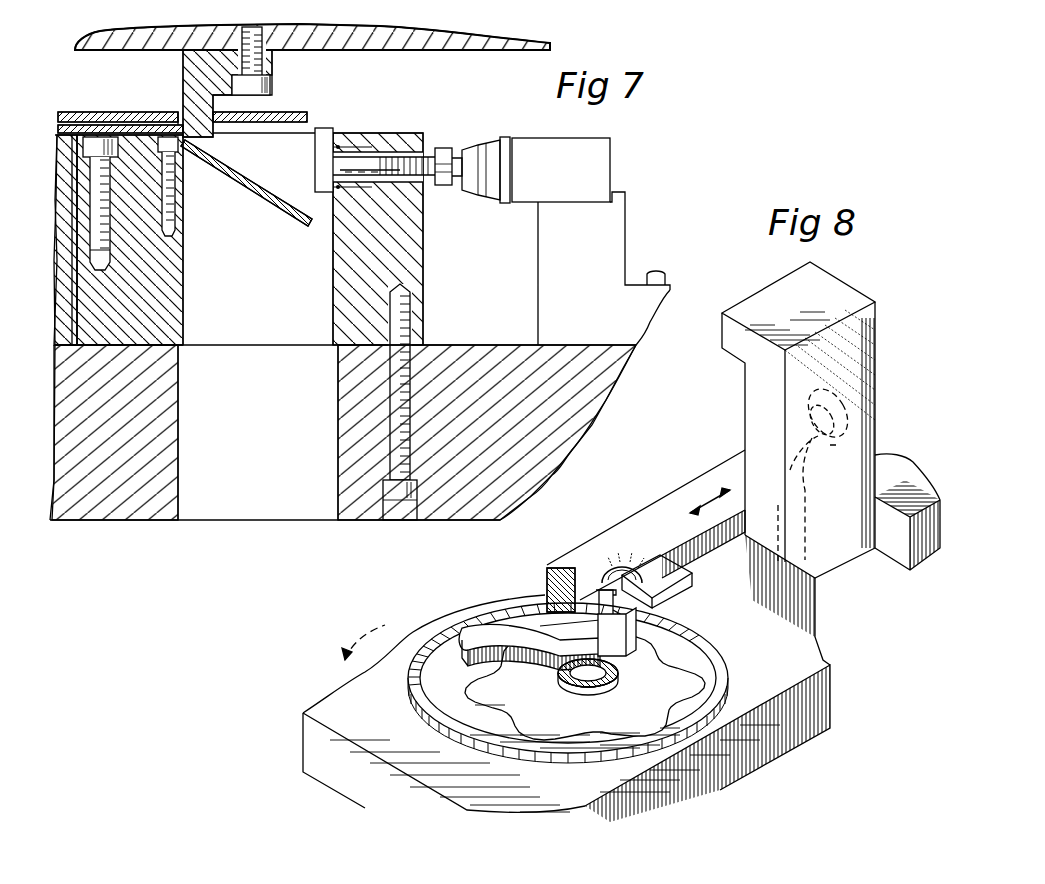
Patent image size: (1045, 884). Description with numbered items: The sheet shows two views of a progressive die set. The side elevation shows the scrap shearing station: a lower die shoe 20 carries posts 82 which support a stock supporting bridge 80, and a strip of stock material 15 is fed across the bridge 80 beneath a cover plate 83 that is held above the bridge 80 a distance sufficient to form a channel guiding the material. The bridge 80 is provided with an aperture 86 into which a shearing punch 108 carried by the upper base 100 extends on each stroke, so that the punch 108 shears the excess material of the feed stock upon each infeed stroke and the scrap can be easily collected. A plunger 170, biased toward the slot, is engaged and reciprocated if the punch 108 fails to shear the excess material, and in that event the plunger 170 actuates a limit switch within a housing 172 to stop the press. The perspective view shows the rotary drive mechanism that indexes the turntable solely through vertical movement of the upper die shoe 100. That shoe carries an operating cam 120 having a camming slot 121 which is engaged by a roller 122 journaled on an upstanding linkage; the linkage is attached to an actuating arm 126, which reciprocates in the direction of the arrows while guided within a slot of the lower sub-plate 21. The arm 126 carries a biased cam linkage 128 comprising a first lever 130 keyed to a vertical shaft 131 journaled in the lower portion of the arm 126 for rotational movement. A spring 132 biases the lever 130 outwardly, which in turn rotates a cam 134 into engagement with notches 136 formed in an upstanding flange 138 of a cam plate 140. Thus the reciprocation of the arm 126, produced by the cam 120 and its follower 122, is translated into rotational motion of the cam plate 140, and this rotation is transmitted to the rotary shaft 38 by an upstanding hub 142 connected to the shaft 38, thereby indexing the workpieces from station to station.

In FIG. 7, the stock material 15 is at (84, 122).
In FIG. 7, the lower die shoe 20 is at (112, 522).
In FIG. 8, the lower sub-plate 21 is at (783, 668).
In FIG. 8, the rotary shaft 38 is at (554, 702).
In FIG. 7, the bridge 80 is at (82, 173).
In FIG. 7, the posts 82 is at (180, 293).
In FIG. 7, the cover plate 83 is at (296, 118).
In FIG. 7, the aperture 86 is at (183, 113).
In FIG. 7, the upper base 100 is at (393, 30).
In FIG. 7, the shearing punch 108 is at (183, 72).
In FIG. 8, the operating cam 120 is at (816, 303).
In FIG. 8, the camming slot 121 is at (845, 456).
In FIG. 8, the roller 122 is at (845, 388).
In FIG. 8, the actuating arm 126 is at (690, 498).
In FIG. 8, the biased cam linkage 128 is at (553, 566).
In FIG. 8, the first lever 130 is at (650, 565).
In FIG. 8, the vertical shaft 131 is at (640, 612).
In FIG. 8, the spring 132 is at (630, 565).
In FIG. 8, the cam 134 is at (606, 640).
In FIG. 8, the notches 136 is at (470, 645).
In FIG. 8, the upstanding flange 138 is at (676, 634).
In FIG. 8, the cam plate 140 is at (641, 693).
In FIG. 8, the upstanding hub 142 is at (556, 678).
In FIG. 7, the plunger 170 is at (394, 160).
In FIG. 7, the housing 172 is at (549, 158).